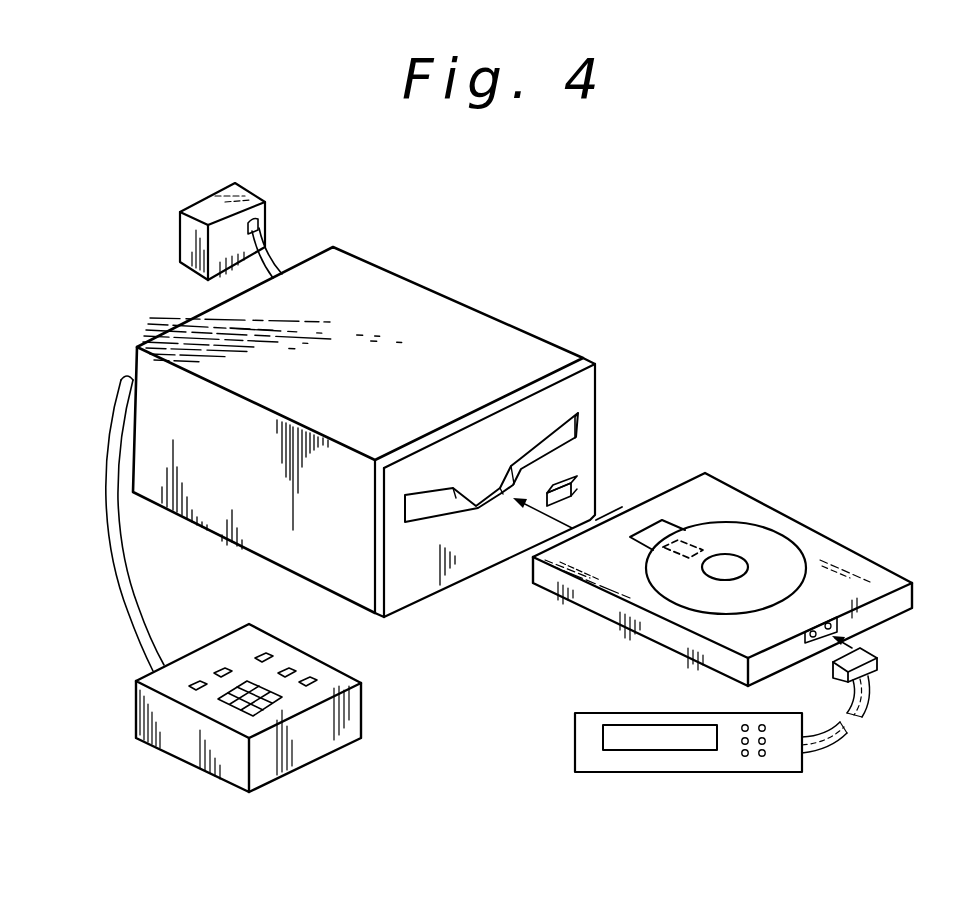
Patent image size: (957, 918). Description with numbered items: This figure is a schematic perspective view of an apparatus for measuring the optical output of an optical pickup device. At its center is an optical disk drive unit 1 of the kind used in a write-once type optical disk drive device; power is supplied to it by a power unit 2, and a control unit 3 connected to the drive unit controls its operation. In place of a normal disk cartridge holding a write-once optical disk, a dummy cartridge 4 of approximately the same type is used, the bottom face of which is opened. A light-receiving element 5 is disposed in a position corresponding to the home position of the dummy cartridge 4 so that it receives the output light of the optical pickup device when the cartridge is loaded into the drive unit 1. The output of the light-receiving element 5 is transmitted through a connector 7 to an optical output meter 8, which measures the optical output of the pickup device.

The optical disk drive unit 1 is at (469, 307).
The power unit 2 is at (253, 193).
The control unit 3 is at (191, 750).
The dummy cartridge 4 is at (767, 512).
The light-receiving element 5 is at (691, 538).
The connector 7 is at (872, 650).
The optical output meter 8 is at (765, 768).